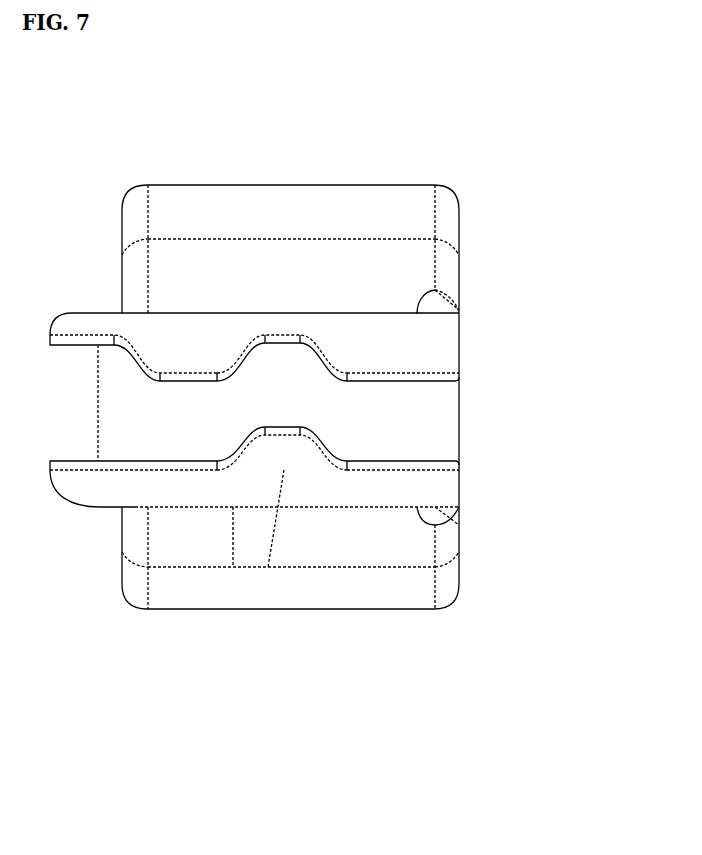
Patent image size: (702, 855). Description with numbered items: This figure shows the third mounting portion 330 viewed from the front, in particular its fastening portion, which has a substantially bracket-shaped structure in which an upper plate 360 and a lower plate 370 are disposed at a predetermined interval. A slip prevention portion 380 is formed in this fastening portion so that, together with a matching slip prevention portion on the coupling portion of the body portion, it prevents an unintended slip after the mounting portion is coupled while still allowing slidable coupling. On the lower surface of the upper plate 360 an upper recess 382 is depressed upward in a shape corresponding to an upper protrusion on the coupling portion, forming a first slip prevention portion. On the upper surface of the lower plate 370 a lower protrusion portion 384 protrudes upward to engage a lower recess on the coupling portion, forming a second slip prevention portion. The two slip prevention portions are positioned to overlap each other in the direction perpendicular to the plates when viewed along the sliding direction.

The third mounting portion 330 is at (114, 145).
The upper plate 360 is at (447, 346).
The lower plate 370 is at (447, 486).
The slip prevention portion 380 is at (260, 724).
The upper recess 382 is at (282, 346).
The lower protrusion portion 384 is at (282, 447).